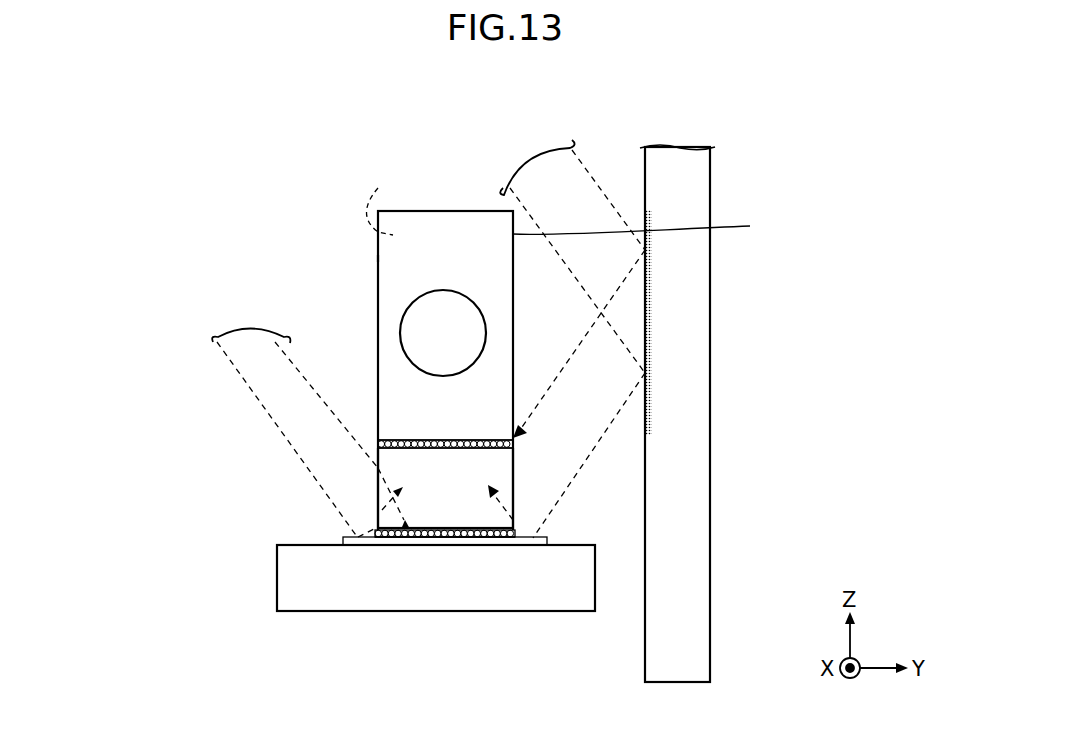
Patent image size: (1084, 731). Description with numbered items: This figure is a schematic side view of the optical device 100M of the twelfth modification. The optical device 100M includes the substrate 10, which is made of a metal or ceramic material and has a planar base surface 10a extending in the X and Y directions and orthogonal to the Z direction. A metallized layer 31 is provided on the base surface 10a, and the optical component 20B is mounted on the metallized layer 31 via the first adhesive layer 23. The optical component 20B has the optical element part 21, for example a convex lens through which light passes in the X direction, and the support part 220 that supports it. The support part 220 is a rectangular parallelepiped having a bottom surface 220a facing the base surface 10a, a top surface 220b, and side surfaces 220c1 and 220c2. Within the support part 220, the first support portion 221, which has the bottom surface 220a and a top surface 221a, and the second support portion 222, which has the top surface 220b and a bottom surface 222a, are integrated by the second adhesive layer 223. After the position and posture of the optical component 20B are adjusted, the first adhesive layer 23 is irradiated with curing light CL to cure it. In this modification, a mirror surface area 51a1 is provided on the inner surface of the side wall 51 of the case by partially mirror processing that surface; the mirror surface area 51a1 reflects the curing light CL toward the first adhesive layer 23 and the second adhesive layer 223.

The optical device 100M is at (188, 146).
The substrate 10 is at (600, 580).
The base surface 10a is at (575, 542).
The optical component 20B is at (140, 403).
The optical element part 21 is at (415, 333).
The first adhesive layer 23 is at (393, 548).
The metallized layer 31 is at (347, 548).
The side wall 51 is at (645, 182).
The mirror surface area 51a1 is at (646, 300).
The support part 220 is at (207, 432).
The bottom surface 220a is at (463, 548).
The top surface 220b is at (455, 210).
The side surface 220c1 is at (403, 225).
The side surface 220c2 is at (378, 258).
The first support portion 221 is at (380, 468).
The top surface 221a is at (487, 436).
The second support portion 222 is at (390, 392).
The bottom surface 222a is at (500, 452).
The second adhesive layer 223 is at (382, 443).
The curing light CL is at (233, 335).